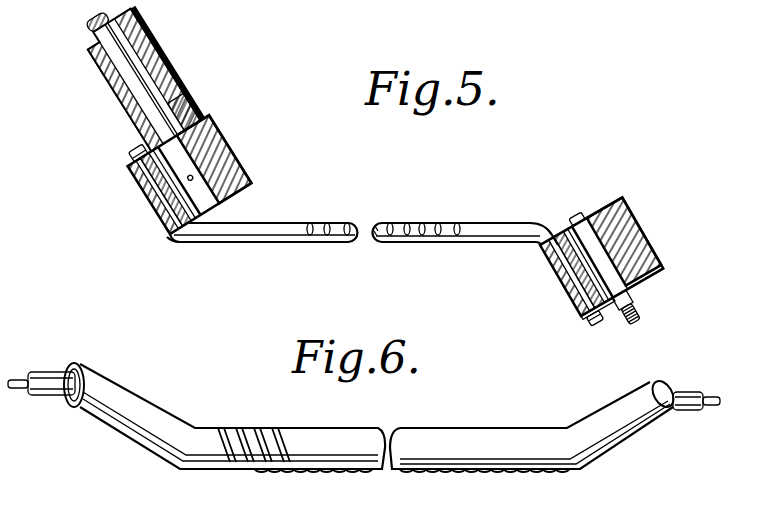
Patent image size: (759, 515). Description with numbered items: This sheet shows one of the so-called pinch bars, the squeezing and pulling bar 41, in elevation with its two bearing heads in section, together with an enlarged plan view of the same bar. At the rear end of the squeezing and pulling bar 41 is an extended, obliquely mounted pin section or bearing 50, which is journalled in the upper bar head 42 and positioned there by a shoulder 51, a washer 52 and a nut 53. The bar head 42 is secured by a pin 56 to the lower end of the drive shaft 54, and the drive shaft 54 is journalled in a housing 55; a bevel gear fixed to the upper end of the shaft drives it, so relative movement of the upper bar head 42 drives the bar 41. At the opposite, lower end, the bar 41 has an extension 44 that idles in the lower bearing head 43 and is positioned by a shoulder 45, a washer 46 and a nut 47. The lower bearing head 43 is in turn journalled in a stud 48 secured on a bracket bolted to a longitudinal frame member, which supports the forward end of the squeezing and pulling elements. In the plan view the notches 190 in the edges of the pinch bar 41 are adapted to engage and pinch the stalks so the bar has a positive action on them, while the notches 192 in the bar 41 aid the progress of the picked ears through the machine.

In FIG. 5, the squeezing and pulling bar 41 is at (212, 237).
In FIG. 6, the squeezing and pulling bar 41 is at (448, 438).
In FIG. 5, the upper bar head 42 is at (187, 122).
In FIG. 5, the lower bearing head 43 is at (635, 242).
In FIG. 5, the extension 44 is at (572, 278).
In FIG. 6, the extension 44 is at (695, 408).
In FIG. 5, the shoulder 45 is at (543, 247).
In FIG. 5, the washer 46 is at (580, 320).
In FIG. 5, the nut 47 is at (602, 320).
In FIG. 5, the stud 48 is at (637, 278).
In FIG. 5, the pin section 50 is at (150, 175).
In FIG. 6, the pin section 50 is at (40, 373).
In FIG. 5, the shoulder 51 is at (168, 234).
In FIG. 6, the shoulder 51 is at (72, 370).
In FIG. 5, the washer 52 is at (137, 160).
In FIG. 5, the nut 53 is at (132, 150).
In FIG. 5, the drive shaft 54 is at (167, 93).
In FIG. 5, the housing 55 is at (152, 52).
In FIG. 5, the pin 56 is at (197, 178).
In FIG. 6, the notches 190 is at (333, 473).
In FIG. 5, the notches 192 is at (327, 221).
In FIG. 6, the notches 192 is at (243, 427).